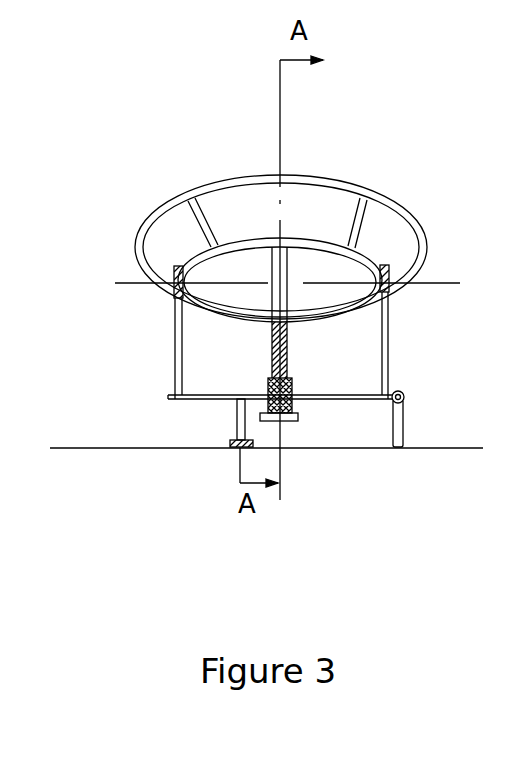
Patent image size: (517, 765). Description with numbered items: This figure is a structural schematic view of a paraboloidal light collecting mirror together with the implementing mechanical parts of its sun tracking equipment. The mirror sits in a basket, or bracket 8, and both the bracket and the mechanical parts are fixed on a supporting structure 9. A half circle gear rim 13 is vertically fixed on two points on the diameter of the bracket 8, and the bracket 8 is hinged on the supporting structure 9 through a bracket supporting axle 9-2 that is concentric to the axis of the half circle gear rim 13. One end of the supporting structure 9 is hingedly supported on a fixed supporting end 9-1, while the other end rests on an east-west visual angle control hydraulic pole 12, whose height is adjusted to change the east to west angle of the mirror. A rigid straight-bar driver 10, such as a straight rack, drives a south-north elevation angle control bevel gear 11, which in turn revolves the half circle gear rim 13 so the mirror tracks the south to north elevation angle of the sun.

The bracket 8 is at (302, 215).
The supporting structure 9 is at (232, 345).
The fixed supporting end 9-1 is at (443, 411).
The bracket supporting axle 9-2 is at (221, 234).
The rigid straight-bar driver 10 is at (376, 378).
The south-north elevation angle control bevel gear 11 is at (381, 363).
The east-west visual angle control hydraulic pole 12 is at (170, 402).
The half circle gear rim 13 is at (389, 316).